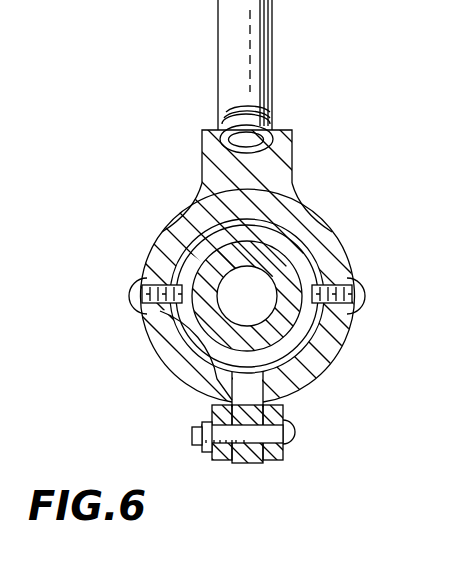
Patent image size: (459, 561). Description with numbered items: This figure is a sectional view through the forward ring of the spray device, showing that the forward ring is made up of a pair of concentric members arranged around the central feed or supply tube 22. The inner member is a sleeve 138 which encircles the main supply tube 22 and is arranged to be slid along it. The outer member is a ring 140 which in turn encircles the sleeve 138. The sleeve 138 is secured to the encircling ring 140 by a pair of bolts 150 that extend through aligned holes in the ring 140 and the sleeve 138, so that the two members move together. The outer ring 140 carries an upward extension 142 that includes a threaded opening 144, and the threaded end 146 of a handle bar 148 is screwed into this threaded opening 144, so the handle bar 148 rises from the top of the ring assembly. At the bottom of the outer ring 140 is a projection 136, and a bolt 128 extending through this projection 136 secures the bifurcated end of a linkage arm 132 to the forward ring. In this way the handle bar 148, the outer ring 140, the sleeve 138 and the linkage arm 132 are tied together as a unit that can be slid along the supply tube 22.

The handle bar 148 is at (224, 12).
The threaded end 146 is at (257, 117).
The threaded opening 144 is at (280, 133).
The upward extension 142 is at (270, 167).
The central feed or supply tube 22 is at (280, 270).
The sleeve 138 is at (313, 270).
The bolts 150 is at (160, 284).
The ring 140 is at (318, 361).
The linkage arm 132 is at (212, 412).
The projection 136 is at (244, 462).
The bolt 128 is at (293, 432).